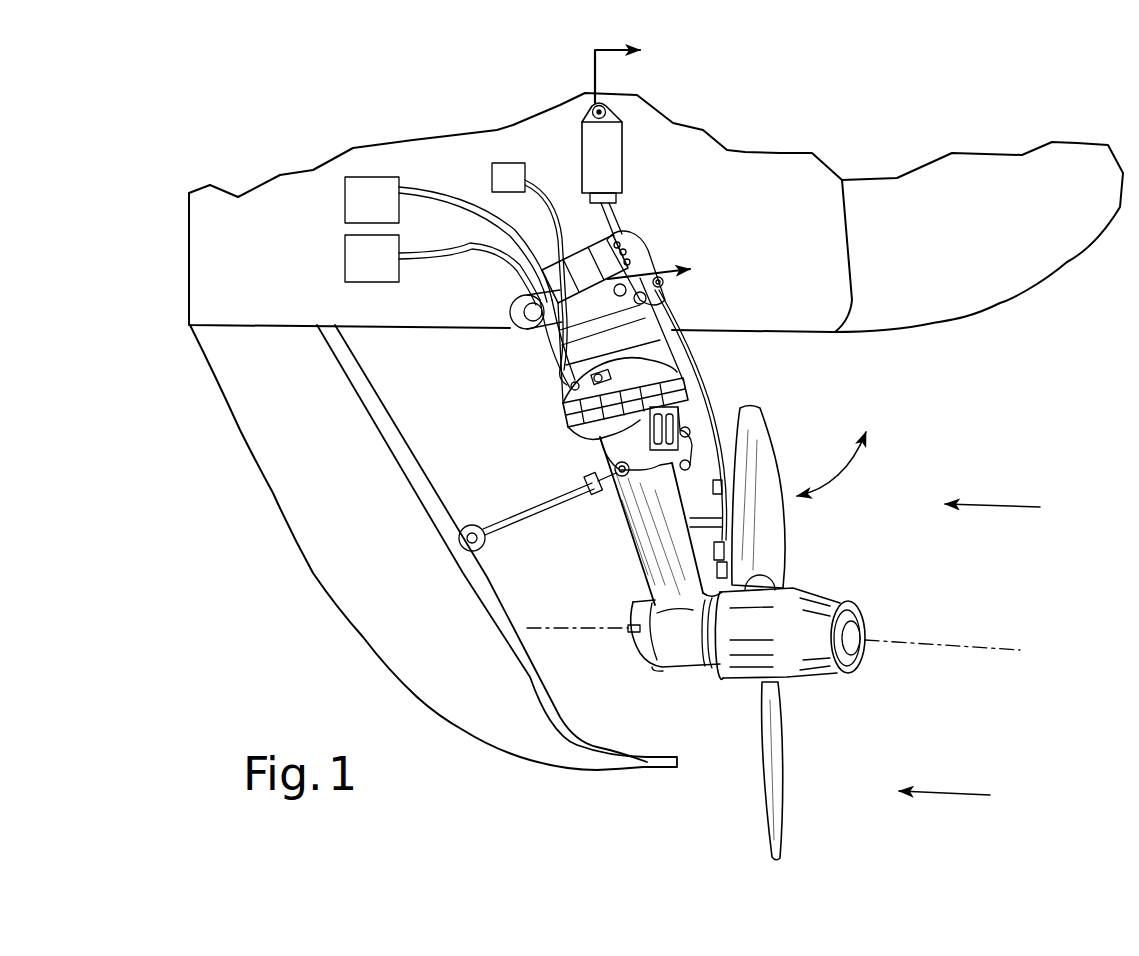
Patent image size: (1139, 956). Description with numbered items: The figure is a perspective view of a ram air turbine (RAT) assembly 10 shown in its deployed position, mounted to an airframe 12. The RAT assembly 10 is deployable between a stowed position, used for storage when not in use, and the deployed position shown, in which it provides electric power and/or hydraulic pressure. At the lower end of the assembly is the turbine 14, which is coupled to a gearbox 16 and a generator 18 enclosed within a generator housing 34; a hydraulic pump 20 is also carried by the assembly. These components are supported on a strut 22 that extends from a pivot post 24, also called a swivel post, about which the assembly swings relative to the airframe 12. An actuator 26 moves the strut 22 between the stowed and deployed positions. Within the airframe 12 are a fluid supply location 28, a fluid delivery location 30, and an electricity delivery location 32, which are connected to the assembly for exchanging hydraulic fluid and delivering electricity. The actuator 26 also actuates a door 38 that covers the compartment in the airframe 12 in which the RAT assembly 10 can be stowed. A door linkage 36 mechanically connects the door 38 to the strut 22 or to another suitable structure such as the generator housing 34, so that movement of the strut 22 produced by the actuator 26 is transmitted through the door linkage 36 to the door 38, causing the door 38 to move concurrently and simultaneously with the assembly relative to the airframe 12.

The ram air turbine (RAT) assembly 10 is at (803, 418).
The airframe 12 is at (820, 265).
The turbine 14 is at (735, 650).
The gearbox 16 is at (685, 645).
The generator 18 is at (548, 380).
The hydraulic pump 20 is at (597, 285).
The strut 22 is at (645, 523).
The pivot post 24 is at (518, 313).
The actuator 26 is at (610, 157).
The fluid supply location 28 is at (363, 255).
The fluid delivery location 30 is at (363, 193).
The electricity delivery location 32 is at (500, 173).
The generator housing 34 is at (637, 345).
The door linkage 36 is at (527, 500).
The door 38 is at (645, 760).